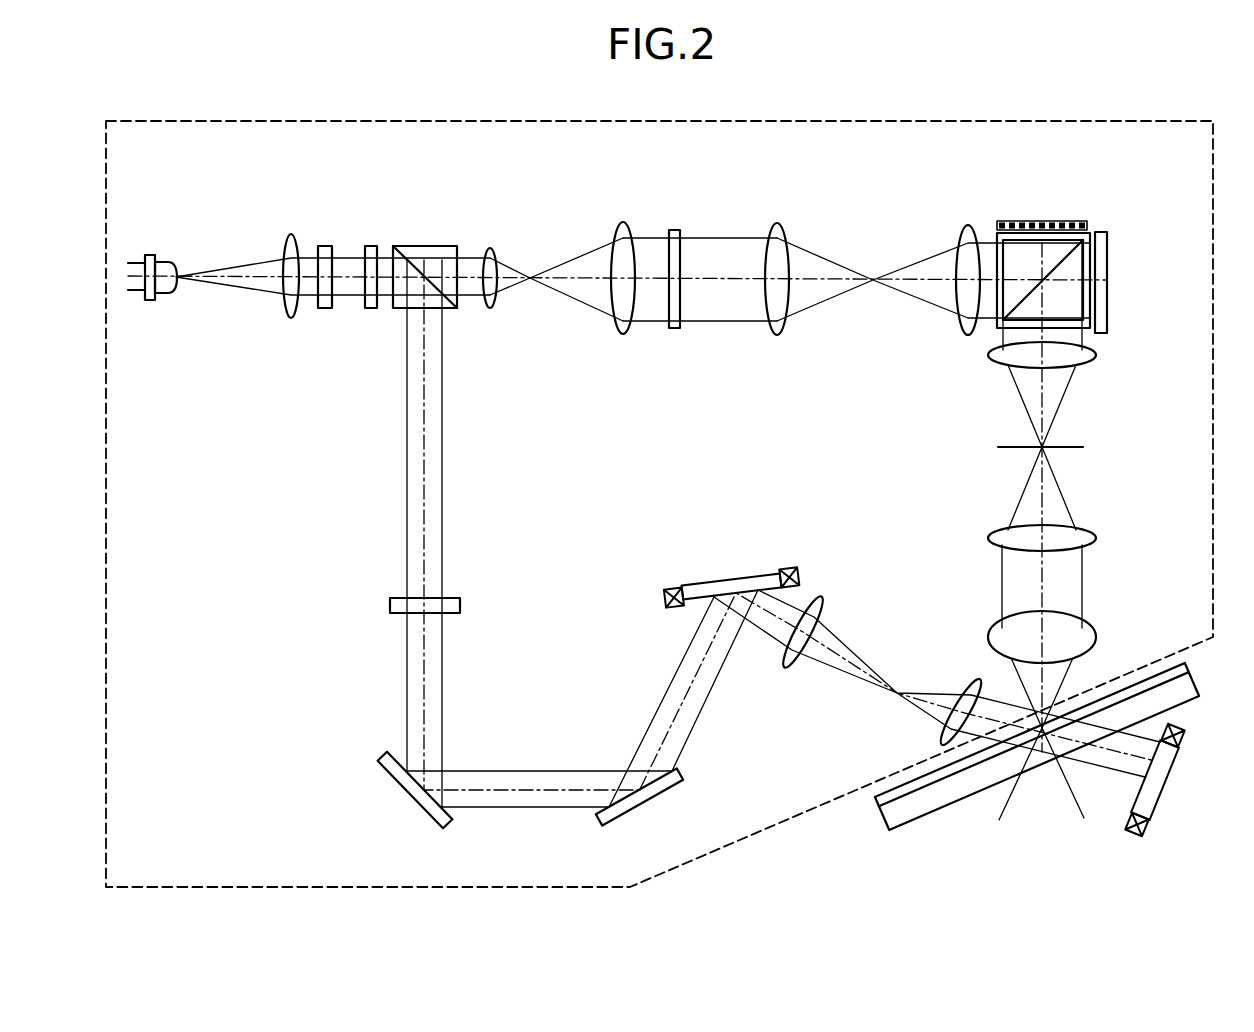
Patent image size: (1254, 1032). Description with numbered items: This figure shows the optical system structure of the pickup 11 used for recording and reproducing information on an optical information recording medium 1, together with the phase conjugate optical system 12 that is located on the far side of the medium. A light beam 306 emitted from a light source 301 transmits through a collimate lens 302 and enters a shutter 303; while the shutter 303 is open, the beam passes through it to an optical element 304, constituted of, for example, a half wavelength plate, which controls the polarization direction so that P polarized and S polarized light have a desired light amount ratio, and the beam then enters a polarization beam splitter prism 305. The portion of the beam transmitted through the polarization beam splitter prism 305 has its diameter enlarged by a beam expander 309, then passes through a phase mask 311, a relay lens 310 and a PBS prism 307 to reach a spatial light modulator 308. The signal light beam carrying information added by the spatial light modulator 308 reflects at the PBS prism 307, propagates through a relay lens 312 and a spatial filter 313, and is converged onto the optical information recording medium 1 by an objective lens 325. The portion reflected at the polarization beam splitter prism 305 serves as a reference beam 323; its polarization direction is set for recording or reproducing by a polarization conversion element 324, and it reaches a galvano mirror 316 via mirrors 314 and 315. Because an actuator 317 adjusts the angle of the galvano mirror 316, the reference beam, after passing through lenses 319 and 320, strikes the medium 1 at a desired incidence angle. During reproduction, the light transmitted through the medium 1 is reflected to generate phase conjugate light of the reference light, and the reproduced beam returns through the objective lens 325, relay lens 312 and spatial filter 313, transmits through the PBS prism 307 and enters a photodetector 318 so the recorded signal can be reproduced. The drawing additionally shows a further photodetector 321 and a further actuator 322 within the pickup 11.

The pickup 11 is at (760, 122).
The phase conjugate optical system 12 is at (1237, 830).
The optical information recording medium 1 is at (910, 822).
The light source 301 is at (170, 262).
The collimate lens 302 is at (292, 235).
The shutter 303 is at (327, 246).
The optical element 304 is at (372, 246).
The polarization beam splitter prism 305 is at (433, 246).
The light beam 306 is at (716, 250).
The PBS prism 307 is at (1013, 257).
The spatial light modulator 308 is at (1052, 222).
The beam expander 309 is at (623, 217).
The relay lens 310 is at (962, 219).
The phase mask 311 is at (674, 328).
The relay lens 312 is at (972, 357).
The spatial filter 313 is at (1083, 447).
The mirror 314 is at (405, 797).
The mirror 315 is at (634, 815).
The galvano mirror 316 is at (750, 579).
The actuator 317 is at (673, 590).
The photodetector 318 is at (1107, 293).
The lens 319 is at (789, 666).
The lens 320 is at (972, 682).
The photodetector 321 is at (1164, 786).
The actuator 322 is at (1139, 836).
The reference beam 323 is at (516, 773).
The polarization conversion element 324 is at (390, 605).
The objective lens 325 is at (1092, 640).